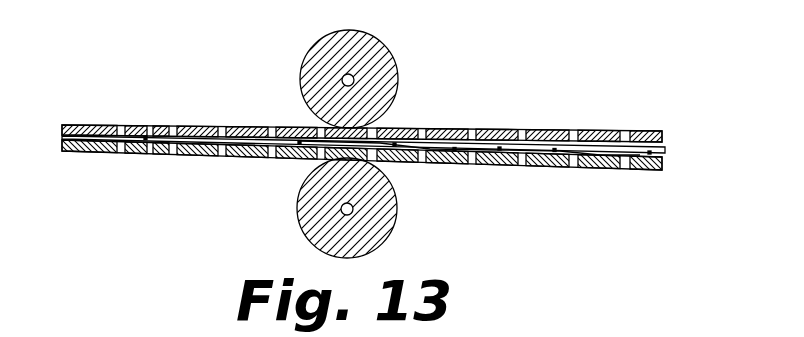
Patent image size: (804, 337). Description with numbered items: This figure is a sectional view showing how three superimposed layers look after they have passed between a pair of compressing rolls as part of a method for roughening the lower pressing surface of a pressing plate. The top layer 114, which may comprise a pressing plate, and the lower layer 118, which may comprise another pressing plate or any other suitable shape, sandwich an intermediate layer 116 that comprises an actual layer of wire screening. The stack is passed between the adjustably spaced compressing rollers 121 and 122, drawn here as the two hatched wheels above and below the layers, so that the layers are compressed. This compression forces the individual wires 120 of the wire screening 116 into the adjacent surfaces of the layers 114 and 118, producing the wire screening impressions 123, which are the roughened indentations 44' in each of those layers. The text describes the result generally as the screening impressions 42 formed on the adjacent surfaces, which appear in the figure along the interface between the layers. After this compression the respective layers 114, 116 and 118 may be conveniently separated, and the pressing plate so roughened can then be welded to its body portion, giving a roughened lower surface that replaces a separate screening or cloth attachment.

The top layer 114 is at (593, 131).
The lower layer 118 is at (607, 172).
The intermediate layer of wire screening 116 is at (660, 151).
The individual wires 120 is at (247, 127).
The compressing roller 121 is at (390, 218).
The compressing roller 122 is at (397, 62).
The wire screening impressions 123 is at (148, 127).
The spacer blocks 42 is at (472, 128).
The roughened indentations 44' is at (104, 160).